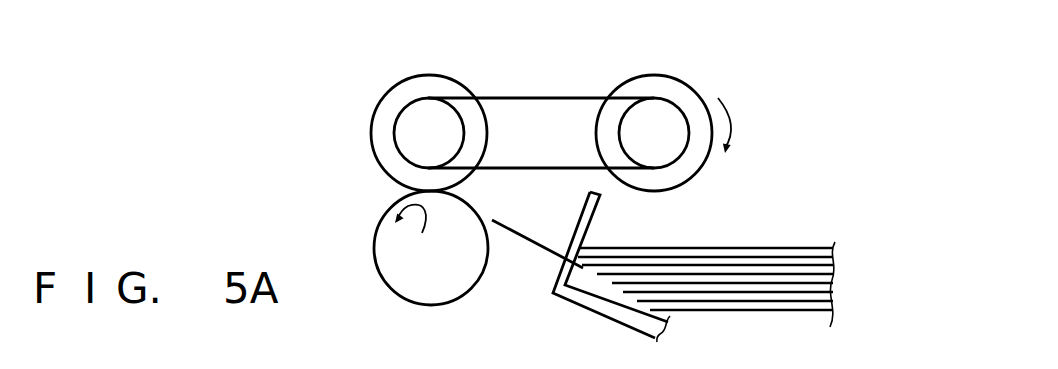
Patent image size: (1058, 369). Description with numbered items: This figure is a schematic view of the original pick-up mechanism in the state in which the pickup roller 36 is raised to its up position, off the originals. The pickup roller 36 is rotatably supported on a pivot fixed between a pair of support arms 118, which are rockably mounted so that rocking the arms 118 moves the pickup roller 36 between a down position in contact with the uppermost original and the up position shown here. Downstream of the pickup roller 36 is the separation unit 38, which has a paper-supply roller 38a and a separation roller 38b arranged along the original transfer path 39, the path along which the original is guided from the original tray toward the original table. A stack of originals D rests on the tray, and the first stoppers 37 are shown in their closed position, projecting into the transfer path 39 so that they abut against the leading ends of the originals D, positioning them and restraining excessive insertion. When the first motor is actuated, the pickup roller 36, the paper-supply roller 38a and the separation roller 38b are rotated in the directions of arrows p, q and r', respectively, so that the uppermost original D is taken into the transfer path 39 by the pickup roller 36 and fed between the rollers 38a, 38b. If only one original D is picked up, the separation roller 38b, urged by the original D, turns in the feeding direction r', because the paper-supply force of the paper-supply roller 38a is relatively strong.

The paper-supply roller 38a is at (429, 75).
The separation unit 38 is at (464, 65).
The support arms 118 is at (573, 108).
The pickup roller 36 is at (685, 85).
The rotation direction of pickup roller p is at (727, 118).
The separation roller 38b is at (382, 222).
The rotation direction of paper-supply roller q is at (470, 190).
The feeding direction of separation roller r' is at (413, 239).
The original transfer path 39 is at (530, 248).
The first stoppers 37 is at (582, 312).
The original D is at (740, 247).